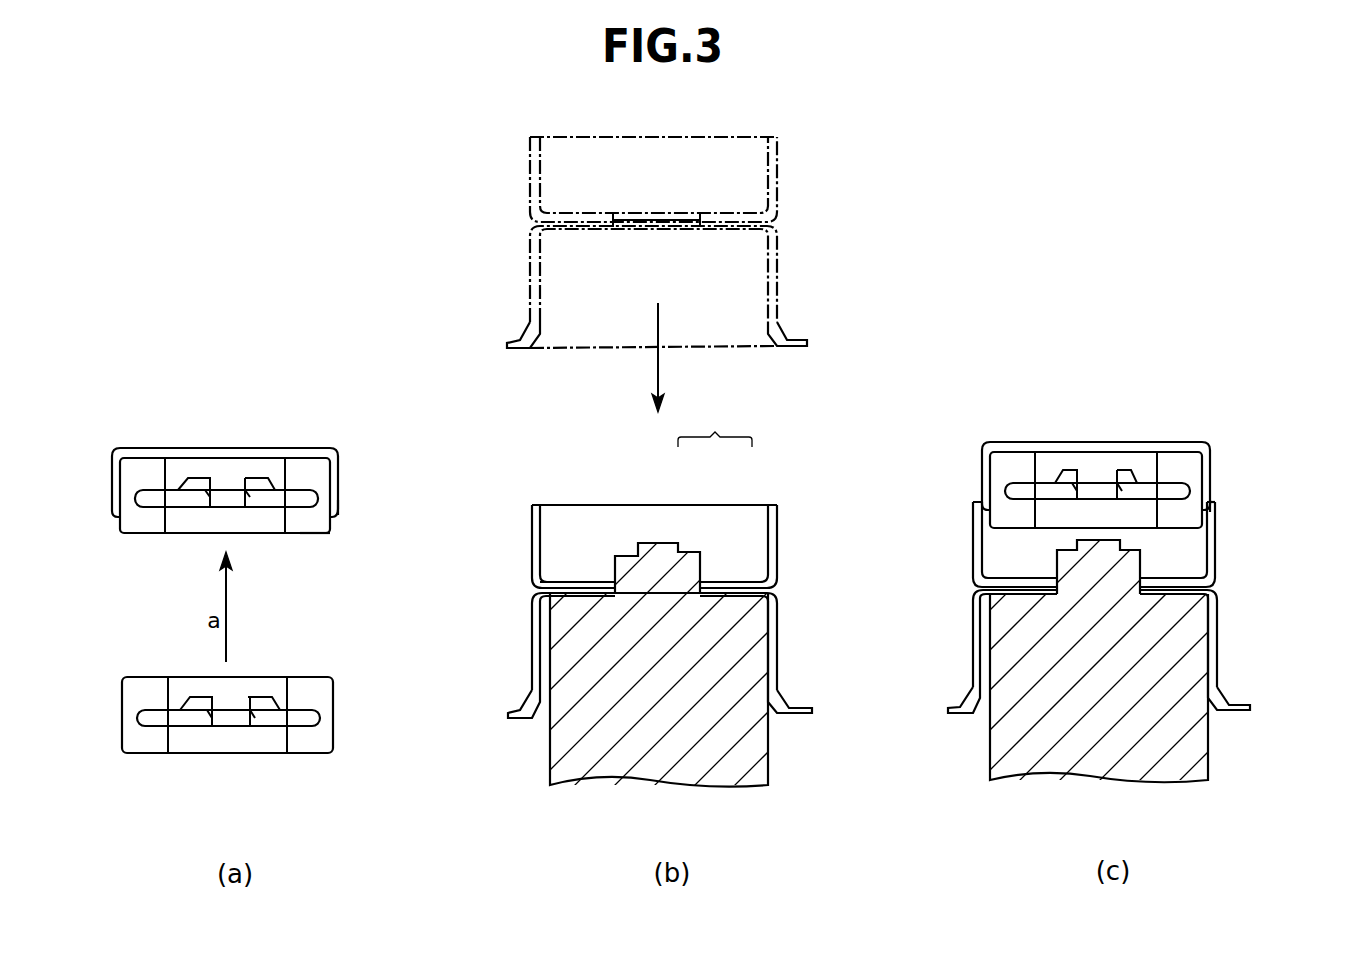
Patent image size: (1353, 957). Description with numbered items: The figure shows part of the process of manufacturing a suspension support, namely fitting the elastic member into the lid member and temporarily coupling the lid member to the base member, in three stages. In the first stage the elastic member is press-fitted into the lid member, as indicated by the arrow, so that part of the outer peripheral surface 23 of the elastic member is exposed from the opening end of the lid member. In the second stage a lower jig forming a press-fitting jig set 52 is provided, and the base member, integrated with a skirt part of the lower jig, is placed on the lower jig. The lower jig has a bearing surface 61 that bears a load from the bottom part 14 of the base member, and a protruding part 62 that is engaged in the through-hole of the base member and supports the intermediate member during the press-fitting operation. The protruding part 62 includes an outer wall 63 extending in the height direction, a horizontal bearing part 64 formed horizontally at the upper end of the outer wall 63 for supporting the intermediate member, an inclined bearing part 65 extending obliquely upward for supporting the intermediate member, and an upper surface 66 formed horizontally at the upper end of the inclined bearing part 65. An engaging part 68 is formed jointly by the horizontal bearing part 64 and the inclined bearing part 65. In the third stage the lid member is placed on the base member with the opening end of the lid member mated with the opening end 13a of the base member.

The opening end of the base member 13a is at (1213, 504).
The bottom part of the base member 14 is at (592, 583).
The outer peripheral surface 23 is at (333, 528).
The press-fitting jig set 52 is at (772, 727).
The bearing surface 61 is at (738, 584).
The protruding part 62 is at (658, 542).
The outer wall 63 is at (708, 580).
The horizontal bearing part 64 is at (692, 552).
The inclined bearing part 65 is at (680, 546).
The upper surface 66 is at (645, 546).
The engaging part 68 is at (715, 426).